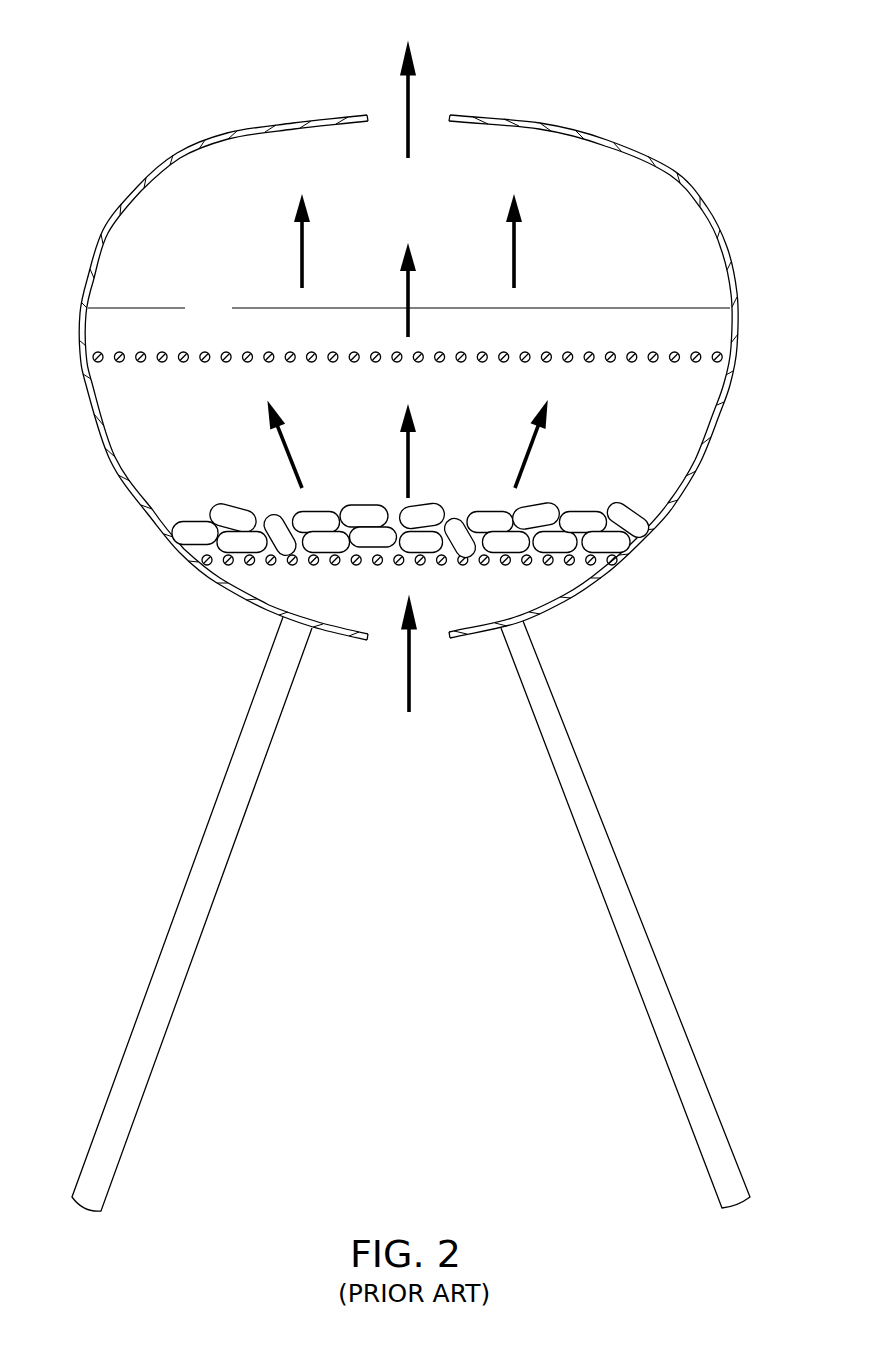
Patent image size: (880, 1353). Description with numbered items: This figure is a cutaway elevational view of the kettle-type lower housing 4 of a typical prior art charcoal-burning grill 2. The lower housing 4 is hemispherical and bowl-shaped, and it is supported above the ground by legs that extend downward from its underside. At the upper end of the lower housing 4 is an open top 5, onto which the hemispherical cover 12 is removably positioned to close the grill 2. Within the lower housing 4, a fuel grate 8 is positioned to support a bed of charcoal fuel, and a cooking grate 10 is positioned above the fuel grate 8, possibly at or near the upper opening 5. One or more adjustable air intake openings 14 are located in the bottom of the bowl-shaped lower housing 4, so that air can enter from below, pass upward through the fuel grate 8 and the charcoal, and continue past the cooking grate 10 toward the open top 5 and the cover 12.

The kettle-type grill 2 is at (699, 44).
The lower housing 4 is at (110, 462).
The open top 5 is at (627, 287).
The fuel grate 8 is at (463, 566).
The cooking grate 10 is at (248, 351).
The hemispherical cover 12 is at (579, 128).
The adjustable air intake opening 14 is at (433, 658).